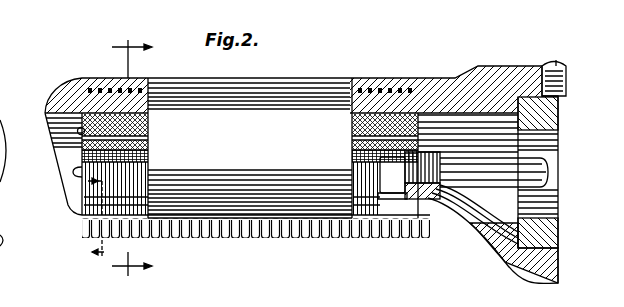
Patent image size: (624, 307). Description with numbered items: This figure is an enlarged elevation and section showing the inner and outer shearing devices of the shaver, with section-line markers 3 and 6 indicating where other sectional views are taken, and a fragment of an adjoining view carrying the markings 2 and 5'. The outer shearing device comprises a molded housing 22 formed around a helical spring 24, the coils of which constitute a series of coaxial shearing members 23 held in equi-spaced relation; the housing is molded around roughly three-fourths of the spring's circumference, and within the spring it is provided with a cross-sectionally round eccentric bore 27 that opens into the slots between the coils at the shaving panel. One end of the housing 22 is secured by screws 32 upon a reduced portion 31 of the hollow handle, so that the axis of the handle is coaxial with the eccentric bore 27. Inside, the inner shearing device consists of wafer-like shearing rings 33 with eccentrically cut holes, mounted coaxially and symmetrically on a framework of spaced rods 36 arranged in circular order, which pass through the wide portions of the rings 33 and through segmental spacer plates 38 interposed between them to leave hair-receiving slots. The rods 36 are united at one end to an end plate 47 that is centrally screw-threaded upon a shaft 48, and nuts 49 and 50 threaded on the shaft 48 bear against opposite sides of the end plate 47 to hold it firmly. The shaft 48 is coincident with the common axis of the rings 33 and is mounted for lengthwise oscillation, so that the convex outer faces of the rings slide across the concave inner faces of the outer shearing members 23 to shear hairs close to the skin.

The adjacent figure numeral 2 is at (6, 125).
The section line 3- 3 is at (139, 158).
The adjacent figure part 5' is at (8, 249).
The section line 6- 6 is at (85, 220).
The housing 22 is at (402, 58).
The shearing members 23 is at (306, 240).
The helical spring 24 is at (375, 93).
The eccentric bore 27 is at (79, 125).
The reduced portion 31 is at (528, 236).
The screws 32 is at (556, 61).
The rings 33 is at (149, 142).
The rods 36 is at (72, 173).
The spacer plates 38 is at (139, 187).
The end plate 47 is at (422, 143).
The shaft 48 is at (494, 172).
The nut 49 is at (440, 151).
The nut 50 is at (392, 178).